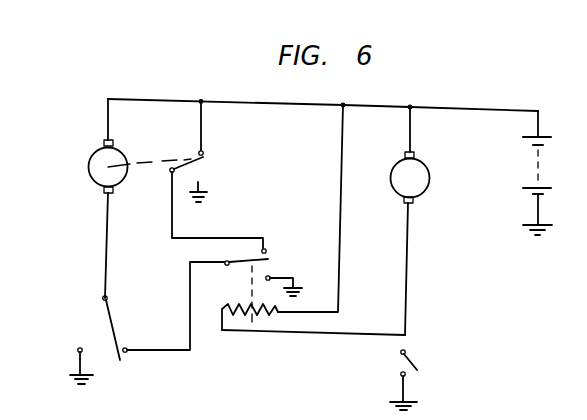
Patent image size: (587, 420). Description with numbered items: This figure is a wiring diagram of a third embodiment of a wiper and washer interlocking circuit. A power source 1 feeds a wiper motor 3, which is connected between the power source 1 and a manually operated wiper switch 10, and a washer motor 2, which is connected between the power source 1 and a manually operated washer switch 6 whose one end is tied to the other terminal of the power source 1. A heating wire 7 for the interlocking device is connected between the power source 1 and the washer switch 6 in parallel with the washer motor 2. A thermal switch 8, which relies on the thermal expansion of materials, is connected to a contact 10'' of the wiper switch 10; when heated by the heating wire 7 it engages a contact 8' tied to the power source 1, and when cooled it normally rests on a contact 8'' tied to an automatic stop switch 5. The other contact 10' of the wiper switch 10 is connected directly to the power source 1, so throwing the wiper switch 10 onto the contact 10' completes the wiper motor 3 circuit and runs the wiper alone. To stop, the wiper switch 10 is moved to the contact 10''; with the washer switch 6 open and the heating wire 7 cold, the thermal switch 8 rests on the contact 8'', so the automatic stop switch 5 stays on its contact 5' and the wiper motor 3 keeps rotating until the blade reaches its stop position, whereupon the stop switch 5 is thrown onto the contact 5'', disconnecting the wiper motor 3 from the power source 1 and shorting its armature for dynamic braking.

The power source 1 is at (546, 176).
The washer motor 2 is at (419, 166).
The wiper motor 3 is at (97, 156).
The automatic stop switch 5 is at (215, 190).
The contact 5' is at (209, 189).
The contact 5'' is at (215, 145).
The washer switch 6 is at (409, 360).
The heating wire 7 is at (257, 312).
The thermal switch 8 is at (242, 290).
The contact 8' is at (293, 276).
The contact 8'' is at (280, 240).
The wiper switch 10 is at (91, 328).
The contact 10' is at (65, 362).
The contact 10'' is at (173, 325).